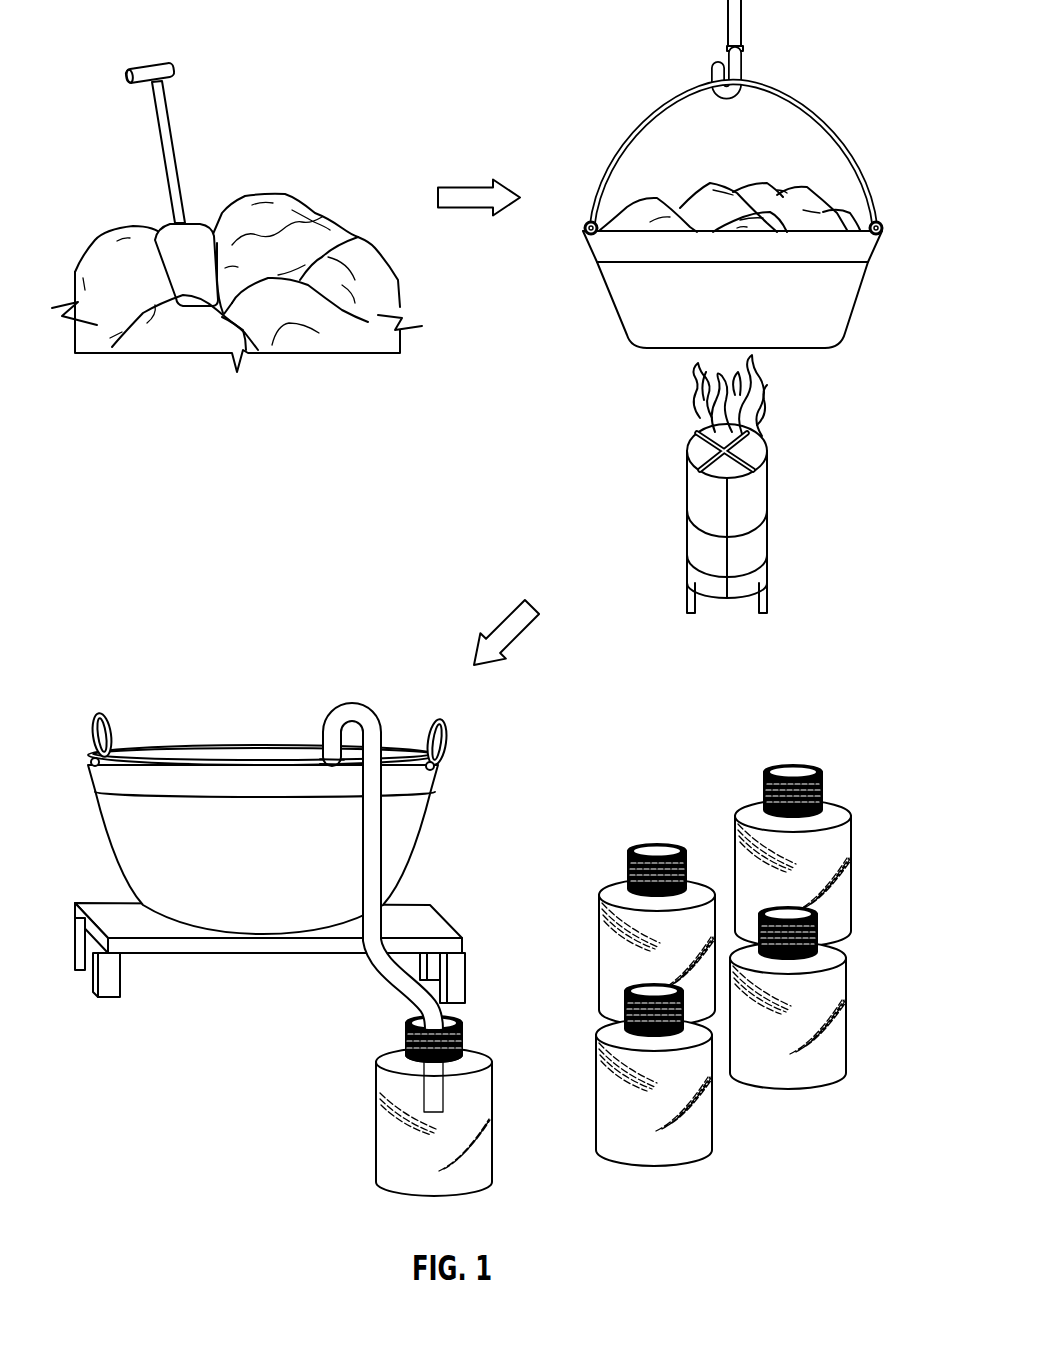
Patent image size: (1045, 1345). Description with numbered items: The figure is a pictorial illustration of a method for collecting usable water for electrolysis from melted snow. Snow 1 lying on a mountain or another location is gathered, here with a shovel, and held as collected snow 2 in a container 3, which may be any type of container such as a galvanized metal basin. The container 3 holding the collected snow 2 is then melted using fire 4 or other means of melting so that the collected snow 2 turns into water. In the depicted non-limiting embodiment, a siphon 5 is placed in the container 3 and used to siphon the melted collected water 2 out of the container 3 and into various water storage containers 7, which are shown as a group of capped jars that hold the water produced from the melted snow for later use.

The snow 1 is at (289, 193).
The collected snow 2 is at (683, 205).
The container 3 is at (861, 298).
The fire 4 is at (771, 476).
The siphon 5 is at (371, 714).
The water storage containers 7 is at (849, 972).